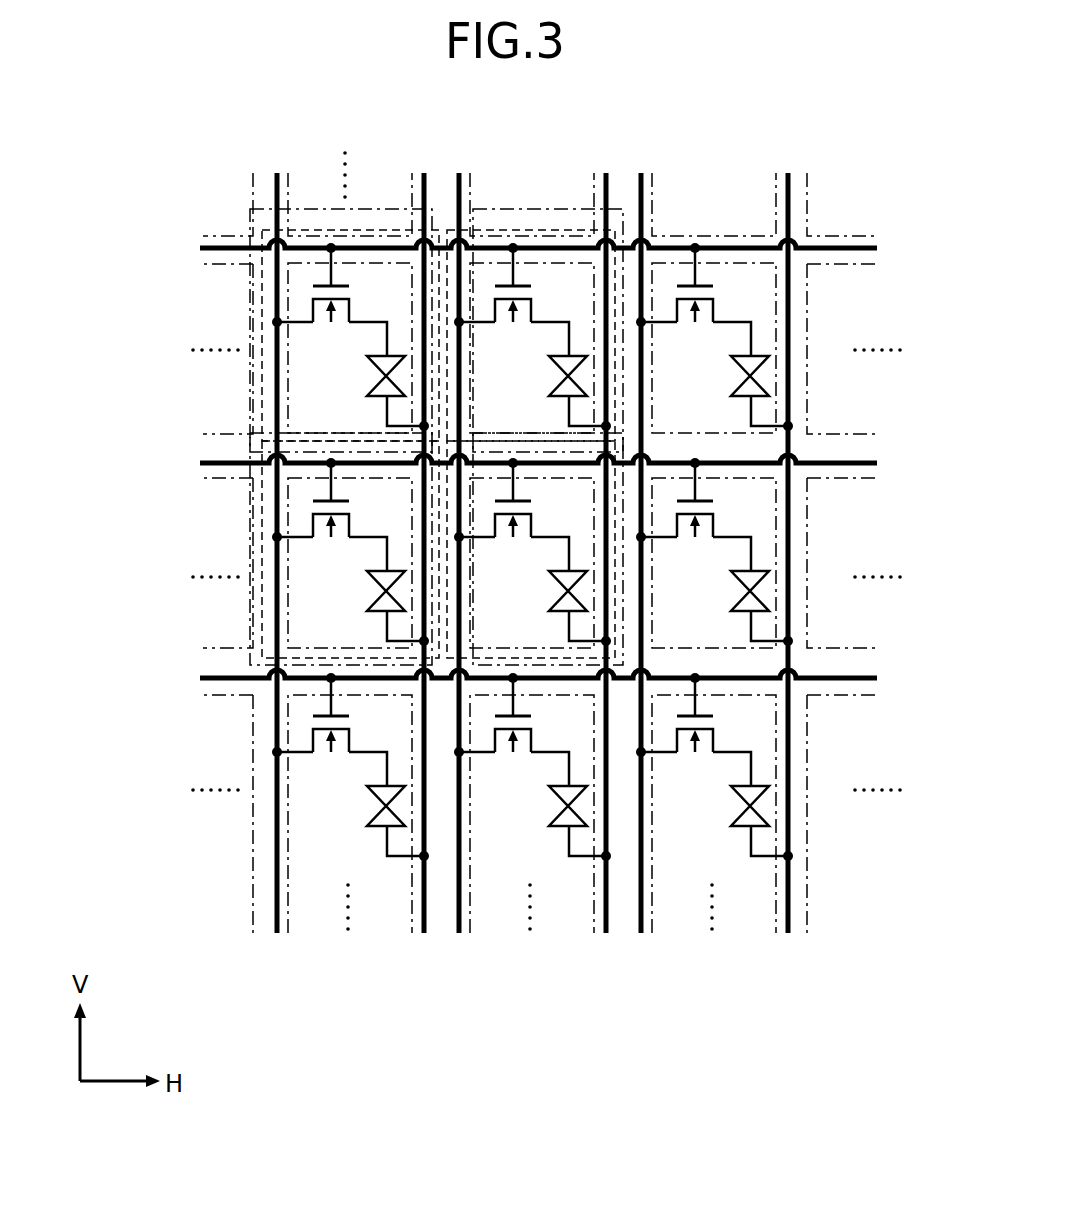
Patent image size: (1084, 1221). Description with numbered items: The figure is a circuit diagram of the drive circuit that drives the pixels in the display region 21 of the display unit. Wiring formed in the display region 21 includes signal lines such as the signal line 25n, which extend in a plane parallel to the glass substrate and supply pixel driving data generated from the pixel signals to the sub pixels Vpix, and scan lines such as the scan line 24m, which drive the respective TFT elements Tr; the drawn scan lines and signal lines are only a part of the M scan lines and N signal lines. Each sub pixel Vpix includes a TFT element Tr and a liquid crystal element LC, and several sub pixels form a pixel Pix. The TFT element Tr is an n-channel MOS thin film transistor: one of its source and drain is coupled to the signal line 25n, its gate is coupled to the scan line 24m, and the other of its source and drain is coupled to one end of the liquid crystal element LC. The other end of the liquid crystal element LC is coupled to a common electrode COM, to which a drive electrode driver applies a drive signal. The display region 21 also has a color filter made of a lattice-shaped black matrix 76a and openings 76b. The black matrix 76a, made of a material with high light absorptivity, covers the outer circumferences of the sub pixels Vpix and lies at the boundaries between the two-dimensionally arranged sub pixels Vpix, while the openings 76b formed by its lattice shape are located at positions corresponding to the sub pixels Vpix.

The display region 21 is at (528, 571).
The scan line 24m is at (240, 247).
The signal line 25n is at (276, 913).
The black matrix 76a is at (865, 234).
The opening 76b is at (740, 275).
The pixel Pix is at (565, 210).
The sub pixel Vpix is at (386, 228).
The common electrode COM is at (424, 906).
The TFT element Tr is at (694, 331).
The liquid crystal element LC is at (738, 382).